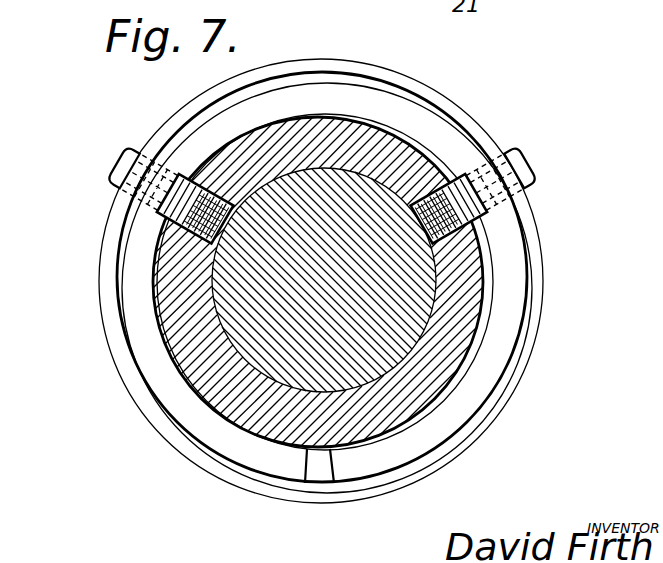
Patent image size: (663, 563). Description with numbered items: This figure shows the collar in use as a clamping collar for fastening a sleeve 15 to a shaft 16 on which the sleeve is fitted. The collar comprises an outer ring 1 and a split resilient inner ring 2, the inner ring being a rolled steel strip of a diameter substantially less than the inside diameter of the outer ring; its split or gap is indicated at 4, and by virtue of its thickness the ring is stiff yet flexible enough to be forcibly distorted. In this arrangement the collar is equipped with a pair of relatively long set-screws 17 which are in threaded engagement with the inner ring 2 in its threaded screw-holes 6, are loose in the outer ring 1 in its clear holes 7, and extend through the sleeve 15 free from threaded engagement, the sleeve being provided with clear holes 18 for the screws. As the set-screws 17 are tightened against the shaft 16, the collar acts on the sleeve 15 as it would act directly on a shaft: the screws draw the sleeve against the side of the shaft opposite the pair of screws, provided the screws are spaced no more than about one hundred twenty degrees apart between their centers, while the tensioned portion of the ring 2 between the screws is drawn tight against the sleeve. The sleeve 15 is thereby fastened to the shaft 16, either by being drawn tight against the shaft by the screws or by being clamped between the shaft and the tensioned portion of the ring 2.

The outer ring 1 is at (185, 445).
The split resilient inner ring 2 is at (160, 373).
The split 4 is at (320, 458).
The threaded screw-holes 6 is at (520, 160).
The clear holes 7 is at (532, 217).
The sleeve 15 is at (452, 330).
The shaft 16 is at (365, 348).
The set-screws 17 is at (466, 236).
The clear holes 18 is at (434, 178).